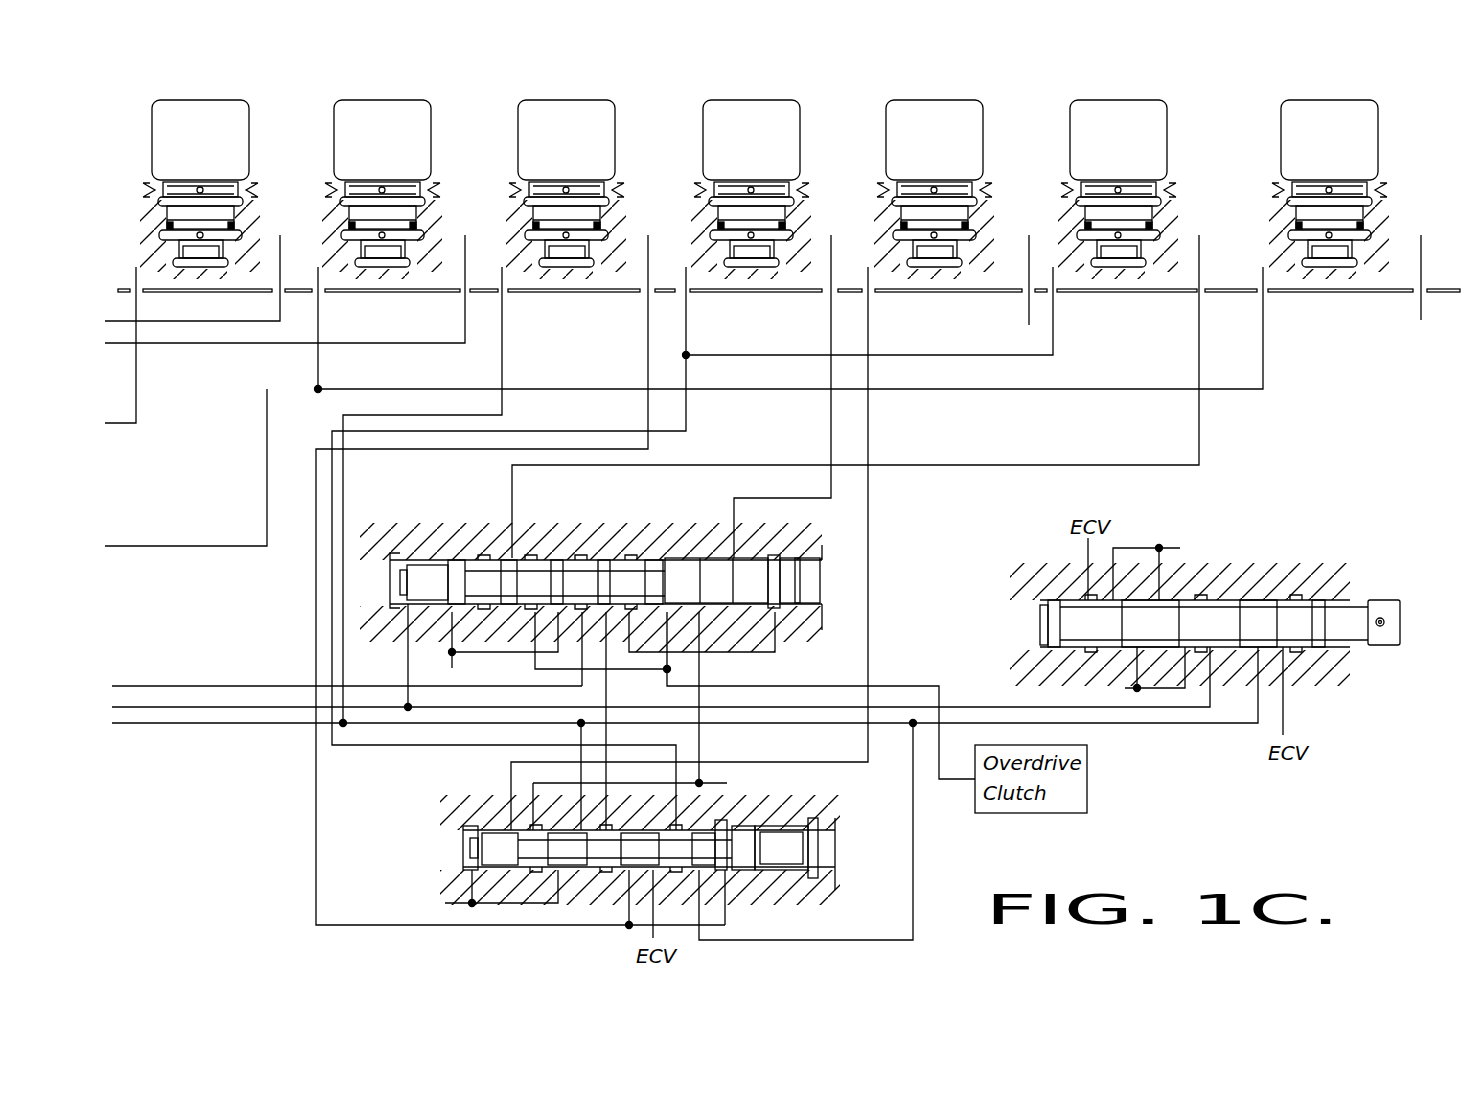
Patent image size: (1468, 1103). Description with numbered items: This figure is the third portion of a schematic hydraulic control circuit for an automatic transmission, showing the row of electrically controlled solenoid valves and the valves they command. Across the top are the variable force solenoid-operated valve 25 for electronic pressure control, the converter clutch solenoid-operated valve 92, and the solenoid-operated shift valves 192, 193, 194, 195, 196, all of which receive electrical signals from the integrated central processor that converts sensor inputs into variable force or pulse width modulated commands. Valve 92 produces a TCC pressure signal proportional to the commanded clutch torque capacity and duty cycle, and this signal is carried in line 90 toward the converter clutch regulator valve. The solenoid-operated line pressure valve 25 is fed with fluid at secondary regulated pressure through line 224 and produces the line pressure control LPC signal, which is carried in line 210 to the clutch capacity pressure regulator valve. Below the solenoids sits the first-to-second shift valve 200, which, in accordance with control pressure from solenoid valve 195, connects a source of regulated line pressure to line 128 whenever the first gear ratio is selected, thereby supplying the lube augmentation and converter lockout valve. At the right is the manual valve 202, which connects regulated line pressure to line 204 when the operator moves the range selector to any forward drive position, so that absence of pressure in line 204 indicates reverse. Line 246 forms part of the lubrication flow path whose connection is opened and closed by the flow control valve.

The variable force solenoid-operated valve 25 is at (262, 218).
The converter clutch solenoid-operated valve 92 is at (445, 216).
The shift solenoid 192 is at (627, 218).
The shift solenoid 193 is at (810, 219).
The shift solenoid 194 is at (990, 219).
The shift solenoid 195 is at (1182, 220).
The solenoid-operated valve 196 is at (1398, 220).
The line 90 is at (383, 343).
The line 210 is at (200, 322).
The line 224 is at (137, 396).
The line 246 is at (216, 546).
The line 128 is at (180, 686).
The line 204 is at (220, 724).
The 1-2 shift valve 200 is at (648, 550).
The manual valve 202 is at (1252, 592).